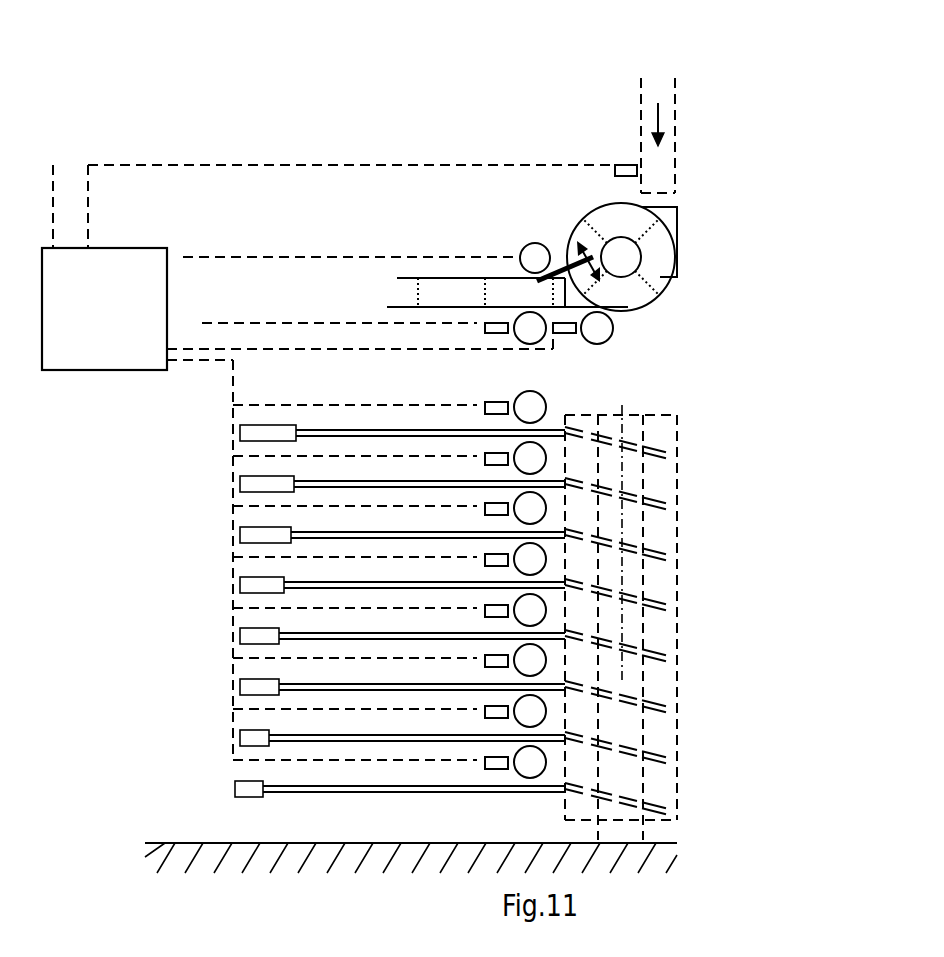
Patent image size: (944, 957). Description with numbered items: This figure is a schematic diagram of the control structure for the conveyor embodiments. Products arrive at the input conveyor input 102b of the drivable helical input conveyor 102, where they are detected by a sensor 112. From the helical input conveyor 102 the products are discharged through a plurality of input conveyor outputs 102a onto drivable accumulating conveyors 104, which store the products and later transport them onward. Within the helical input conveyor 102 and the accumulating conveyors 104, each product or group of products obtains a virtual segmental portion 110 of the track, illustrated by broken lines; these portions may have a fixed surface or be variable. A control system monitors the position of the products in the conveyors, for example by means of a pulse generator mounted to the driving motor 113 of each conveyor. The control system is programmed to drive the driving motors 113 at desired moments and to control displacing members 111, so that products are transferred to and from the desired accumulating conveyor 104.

The virtual segmental portion 110 is at (660, 257).
The displacing member 111 is at (562, 270).
The driving motor 113 is at (492, 403).
The input conveyor input 102b is at (673, 208).
The helical input conveyor 102 is at (655, 475).
The sensor 112 is at (547, 405).
The input conveyor output 102a is at (560, 534).
The accumulating conveyor 104 is at (547, 585).